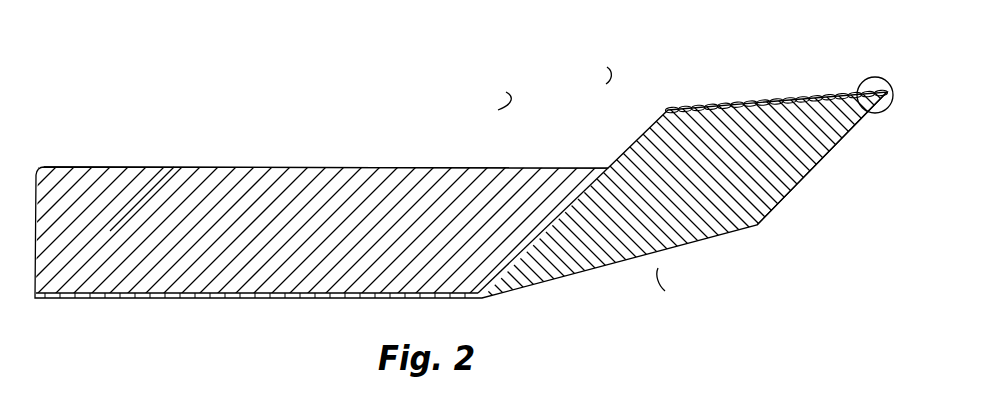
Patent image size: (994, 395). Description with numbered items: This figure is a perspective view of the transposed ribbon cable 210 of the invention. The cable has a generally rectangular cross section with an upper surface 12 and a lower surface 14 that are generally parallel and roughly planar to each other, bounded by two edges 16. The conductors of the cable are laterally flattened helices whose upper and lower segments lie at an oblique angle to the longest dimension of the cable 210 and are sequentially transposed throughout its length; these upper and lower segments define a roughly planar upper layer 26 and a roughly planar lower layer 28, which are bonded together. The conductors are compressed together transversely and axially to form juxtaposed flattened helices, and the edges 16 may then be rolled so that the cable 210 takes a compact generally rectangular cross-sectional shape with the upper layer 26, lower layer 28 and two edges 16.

The transposed ribbon cable 210 is at (525, 168).
The upper surface 12 is at (413, 221).
The lower surface 14 is at (688, 184).
The edges 16 is at (310, 298).
The upper layer 26 is at (147, 197).
The lower layer 28 is at (583, 233).